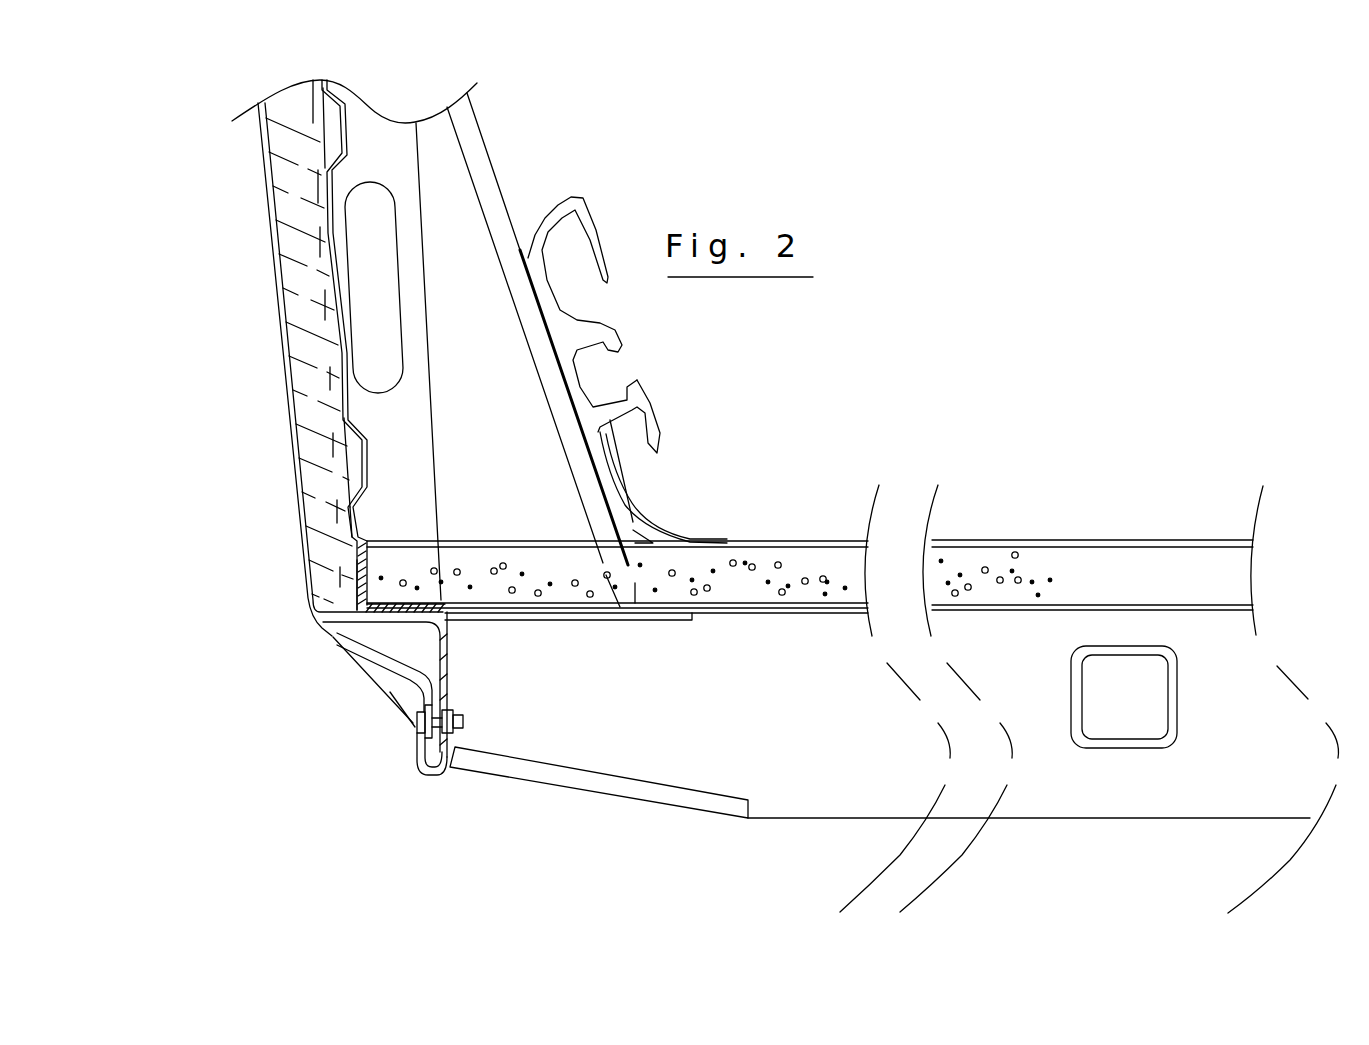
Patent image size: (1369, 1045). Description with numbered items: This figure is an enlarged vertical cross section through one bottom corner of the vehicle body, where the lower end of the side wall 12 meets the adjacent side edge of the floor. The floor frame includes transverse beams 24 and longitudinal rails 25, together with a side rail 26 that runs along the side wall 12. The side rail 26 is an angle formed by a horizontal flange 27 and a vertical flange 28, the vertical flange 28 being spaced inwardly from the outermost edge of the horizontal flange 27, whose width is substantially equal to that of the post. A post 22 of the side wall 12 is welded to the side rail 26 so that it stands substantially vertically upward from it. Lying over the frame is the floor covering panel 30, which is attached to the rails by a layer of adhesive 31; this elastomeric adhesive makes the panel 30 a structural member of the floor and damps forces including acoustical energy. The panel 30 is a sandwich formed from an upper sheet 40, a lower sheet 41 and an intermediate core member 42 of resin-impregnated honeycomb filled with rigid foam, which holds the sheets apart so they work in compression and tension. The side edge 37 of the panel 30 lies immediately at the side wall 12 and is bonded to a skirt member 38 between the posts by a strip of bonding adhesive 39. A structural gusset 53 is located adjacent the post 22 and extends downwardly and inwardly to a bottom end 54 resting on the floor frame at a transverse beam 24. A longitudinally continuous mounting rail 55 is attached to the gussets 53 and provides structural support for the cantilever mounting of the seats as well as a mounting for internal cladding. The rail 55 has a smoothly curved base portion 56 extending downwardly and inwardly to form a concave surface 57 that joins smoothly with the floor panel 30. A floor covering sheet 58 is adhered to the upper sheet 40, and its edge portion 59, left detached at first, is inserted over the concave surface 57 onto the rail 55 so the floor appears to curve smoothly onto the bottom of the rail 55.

The side wall 12 is at (284, 462).
The post 22 is at (412, 198).
The transverse beam 24 is at (622, 762).
The longitudinal rail 25 is at (1106, 743).
The side rail 26 is at (390, 627).
The horizontal flange 27 is at (335, 627).
The vertical flange 28 is at (448, 683).
The floor covering panel 30 is at (733, 560).
The layer of adhesive 31 is at (448, 610).
The side edge 37 is at (369, 571).
The skirt member 38 is at (373, 467).
The strip of bonding adhesive 39 is at (370, 539).
The upper sheet 40 is at (800, 548).
The lower sheet 41 is at (808, 605).
The intermediate core member 42 is at (827, 580).
The structural gusset 53 is at (483, 157).
The bottom end 54 is at (633, 590).
The mounting rail 55 is at (603, 325).
The curved base portion 56 is at (633, 522).
The concave surface 57 is at (657, 527).
The floor covering sheet 58 is at (772, 540).
The edge portion 59 is at (612, 447).